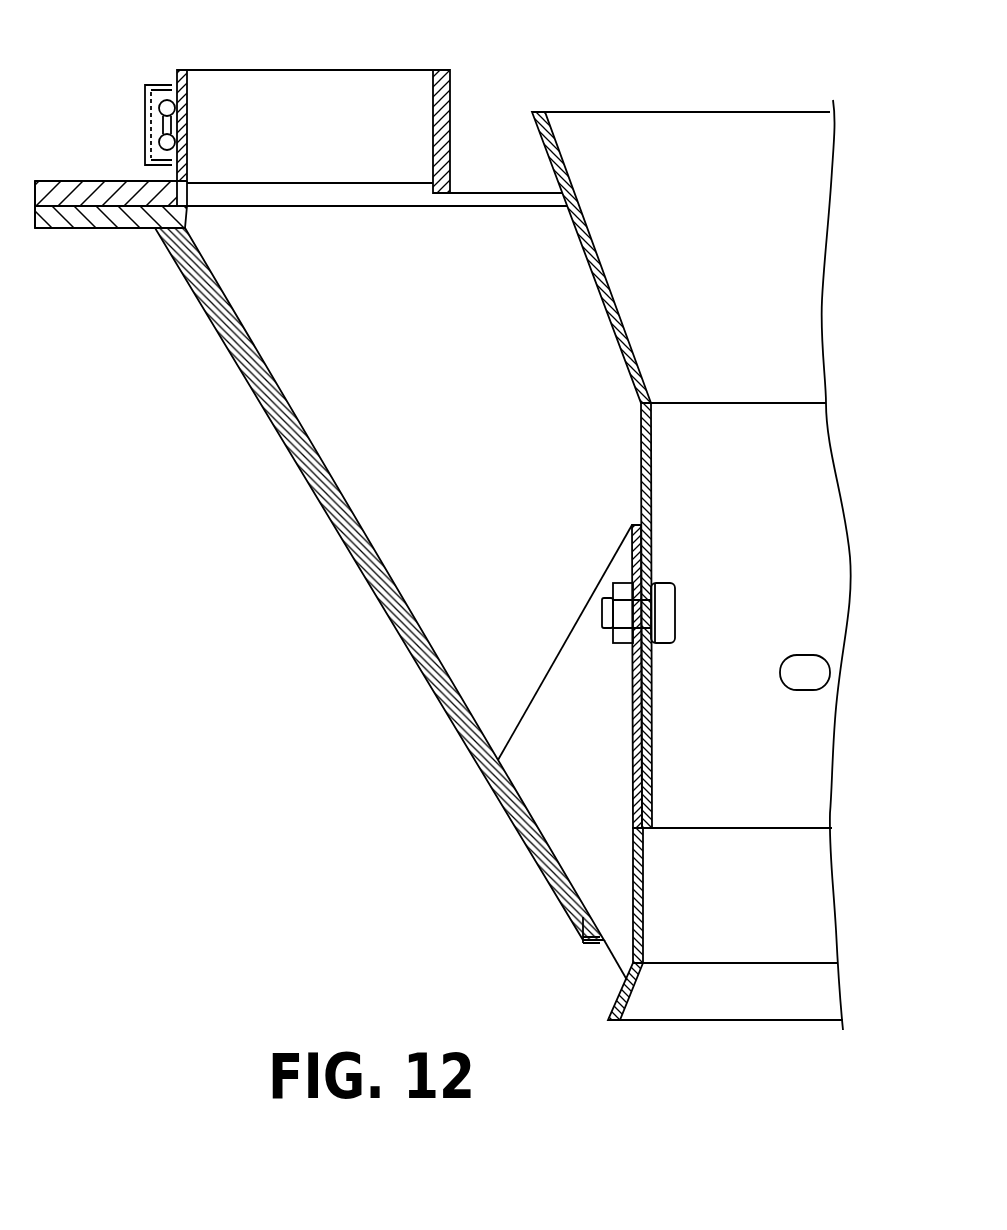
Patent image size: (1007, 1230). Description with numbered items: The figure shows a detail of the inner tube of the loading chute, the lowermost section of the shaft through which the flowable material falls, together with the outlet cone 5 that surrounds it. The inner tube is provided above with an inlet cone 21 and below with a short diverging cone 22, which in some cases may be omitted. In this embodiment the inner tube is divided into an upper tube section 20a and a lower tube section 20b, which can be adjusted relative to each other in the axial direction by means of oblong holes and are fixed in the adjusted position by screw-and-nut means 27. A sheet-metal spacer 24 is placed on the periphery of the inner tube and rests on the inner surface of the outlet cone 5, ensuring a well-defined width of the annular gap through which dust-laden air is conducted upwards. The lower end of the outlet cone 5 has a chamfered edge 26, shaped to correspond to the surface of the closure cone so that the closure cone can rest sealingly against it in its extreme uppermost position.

The outlet cone 5 is at (343, 528).
The inlet cone 21 is at (597, 290).
The upper tube section 20a is at (677, 452).
The lower tube section 20b is at (645, 888).
The short diverging cone 22 is at (618, 1000).
The sheet-metal spacer 24 is at (552, 697).
The chamfered edge 26 is at (583, 942).
The screw-and-nut means 27 is at (665, 620).